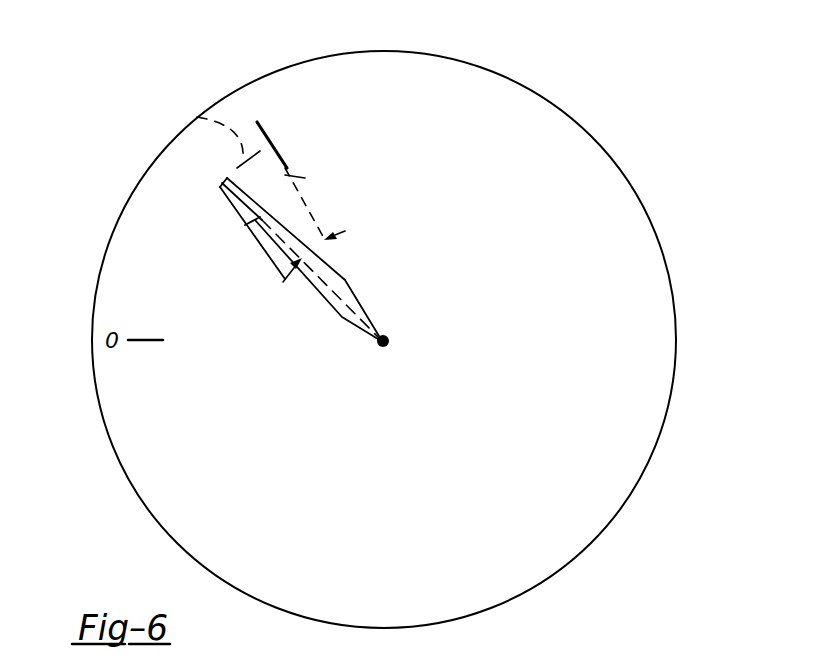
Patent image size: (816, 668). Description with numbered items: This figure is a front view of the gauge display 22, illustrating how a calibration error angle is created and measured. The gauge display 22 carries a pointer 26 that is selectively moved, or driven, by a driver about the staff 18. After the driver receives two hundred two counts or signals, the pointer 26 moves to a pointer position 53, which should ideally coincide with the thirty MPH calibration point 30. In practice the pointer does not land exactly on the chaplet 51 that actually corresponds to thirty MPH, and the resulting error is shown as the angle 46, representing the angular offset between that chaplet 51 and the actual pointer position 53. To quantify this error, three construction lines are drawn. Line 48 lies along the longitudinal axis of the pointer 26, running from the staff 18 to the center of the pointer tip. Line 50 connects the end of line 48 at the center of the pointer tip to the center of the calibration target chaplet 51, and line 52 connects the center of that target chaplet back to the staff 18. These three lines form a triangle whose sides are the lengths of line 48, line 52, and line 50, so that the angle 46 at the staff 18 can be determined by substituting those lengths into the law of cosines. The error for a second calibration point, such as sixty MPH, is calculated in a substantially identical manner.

The staff 18 is at (390, 340).
The gauge display 22 is at (651, 156).
The pointer 26 is at (343, 317).
The 30 MPH calibration point 30 is at (262, 131).
The angle 46 is at (283, 282).
The line 48 is at (257, 218).
The line 50 is at (192, 108).
The chaplet 51 is at (267, 135).
The line 52 is at (290, 180).
The pointer position 53 is at (222, 178).